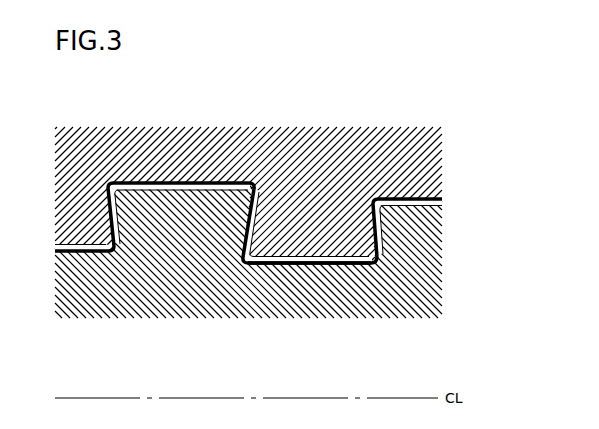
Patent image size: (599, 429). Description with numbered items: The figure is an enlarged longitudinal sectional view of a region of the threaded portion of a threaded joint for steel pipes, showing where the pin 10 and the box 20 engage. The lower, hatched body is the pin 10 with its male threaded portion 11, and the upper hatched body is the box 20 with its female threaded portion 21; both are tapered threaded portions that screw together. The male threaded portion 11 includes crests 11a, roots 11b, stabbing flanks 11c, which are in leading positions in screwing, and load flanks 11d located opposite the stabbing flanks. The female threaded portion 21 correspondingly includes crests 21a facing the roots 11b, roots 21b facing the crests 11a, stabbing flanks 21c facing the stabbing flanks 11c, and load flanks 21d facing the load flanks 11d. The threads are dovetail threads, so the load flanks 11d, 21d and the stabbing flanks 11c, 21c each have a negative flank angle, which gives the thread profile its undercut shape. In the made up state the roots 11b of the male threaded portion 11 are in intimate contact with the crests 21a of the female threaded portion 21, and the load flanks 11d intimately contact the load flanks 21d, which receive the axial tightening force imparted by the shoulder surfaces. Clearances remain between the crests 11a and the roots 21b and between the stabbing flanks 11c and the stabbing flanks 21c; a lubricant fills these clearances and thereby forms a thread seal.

The pin 10 is at (450, 318).
The male threaded portion 11 is at (380, 296).
The crests 11a is at (178, 192).
The roots 11b is at (82, 258).
The stabbing flanks 11c is at (231, 253).
The load flanks 11d is at (126, 246).
The box 20 is at (450, 134).
The female threaded portion 21 is at (377, 137).
The crests 21a is at (84, 250).
The roots 21b is at (182, 182).
The stabbing flanks 21c is at (250, 212).
The load flanks 21d is at (128, 181).